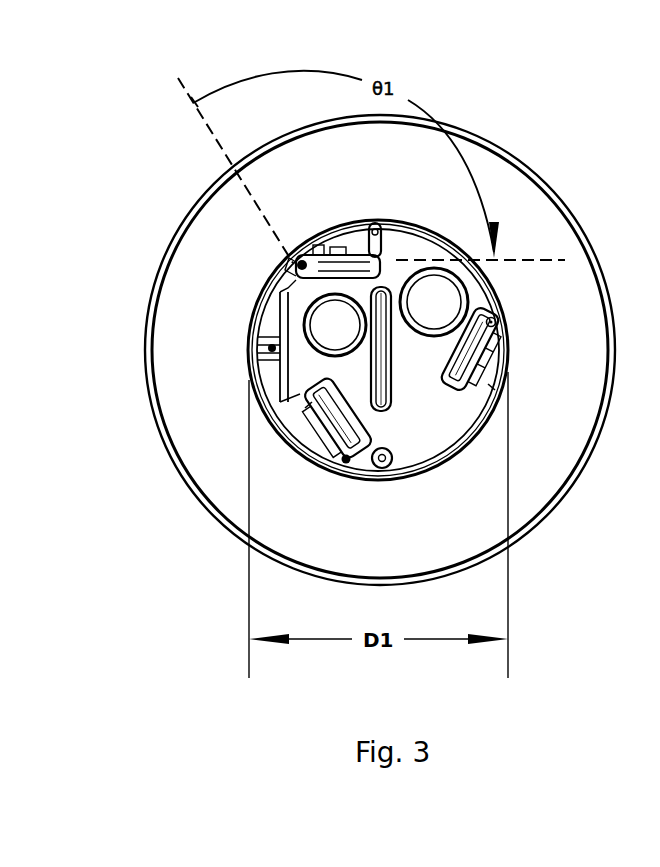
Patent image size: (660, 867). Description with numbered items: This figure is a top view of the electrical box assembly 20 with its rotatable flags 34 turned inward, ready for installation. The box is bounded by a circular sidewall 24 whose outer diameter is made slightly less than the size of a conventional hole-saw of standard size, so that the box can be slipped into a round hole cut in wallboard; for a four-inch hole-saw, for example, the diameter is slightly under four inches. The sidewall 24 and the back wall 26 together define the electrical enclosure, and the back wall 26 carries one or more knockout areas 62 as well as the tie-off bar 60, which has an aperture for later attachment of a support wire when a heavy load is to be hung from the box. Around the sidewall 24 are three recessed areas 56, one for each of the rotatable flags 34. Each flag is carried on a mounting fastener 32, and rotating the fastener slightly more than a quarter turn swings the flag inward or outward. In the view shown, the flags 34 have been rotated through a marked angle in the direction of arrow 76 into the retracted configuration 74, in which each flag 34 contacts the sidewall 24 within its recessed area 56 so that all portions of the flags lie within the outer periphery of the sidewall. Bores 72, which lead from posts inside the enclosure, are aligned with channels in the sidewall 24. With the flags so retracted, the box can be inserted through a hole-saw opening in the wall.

The electrical box assembly 20 is at (158, 169).
The sidewall 24 is at (497, 288).
The back wall 26 is at (430, 418).
The mounting fasteners 32 is at (298, 262).
The rotatable flags 34 is at (352, 252).
The recessed area 56 is at (306, 410).
The tie-off bar 60 is at (388, 422).
The knockout areas 62 is at (346, 335).
The bores 72 is at (374, 236).
The retracted configuration 74 is at (533, 353).
The arrow 76 is at (485, 196).